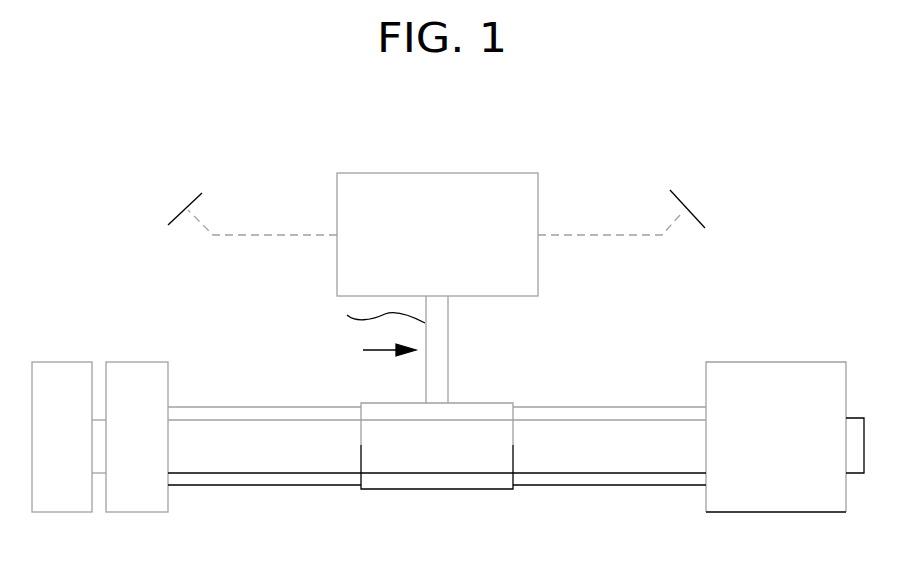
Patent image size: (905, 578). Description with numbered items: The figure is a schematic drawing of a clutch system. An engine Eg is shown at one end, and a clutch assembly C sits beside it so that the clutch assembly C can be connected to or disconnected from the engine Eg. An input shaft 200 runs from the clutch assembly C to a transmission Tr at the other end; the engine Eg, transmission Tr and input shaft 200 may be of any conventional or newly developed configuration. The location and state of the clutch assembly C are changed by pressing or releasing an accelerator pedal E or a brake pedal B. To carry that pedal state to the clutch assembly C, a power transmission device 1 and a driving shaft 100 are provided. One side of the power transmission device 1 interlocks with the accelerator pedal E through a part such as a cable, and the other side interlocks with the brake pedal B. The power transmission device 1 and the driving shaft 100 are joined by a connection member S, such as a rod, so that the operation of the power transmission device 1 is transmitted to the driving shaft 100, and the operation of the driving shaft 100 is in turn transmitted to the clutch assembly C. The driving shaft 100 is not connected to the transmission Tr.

The power transmission device 1 is at (452, 247).
The driving shaft 100 is at (480, 405).
The input shaft 200 is at (623, 445).
The brake pedal B is at (251, 203).
The accelerator pedal E is at (622, 203).
The connection member S is at (374, 328).
The engine Eg is at (62, 437).
The clutch assembly C is at (130, 437).
The transmission Tr is at (785, 437).